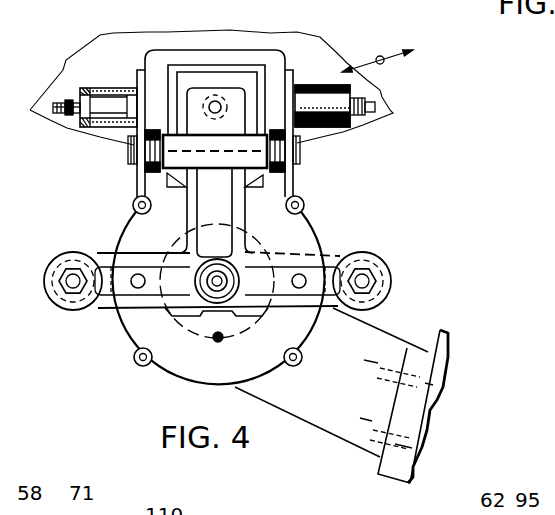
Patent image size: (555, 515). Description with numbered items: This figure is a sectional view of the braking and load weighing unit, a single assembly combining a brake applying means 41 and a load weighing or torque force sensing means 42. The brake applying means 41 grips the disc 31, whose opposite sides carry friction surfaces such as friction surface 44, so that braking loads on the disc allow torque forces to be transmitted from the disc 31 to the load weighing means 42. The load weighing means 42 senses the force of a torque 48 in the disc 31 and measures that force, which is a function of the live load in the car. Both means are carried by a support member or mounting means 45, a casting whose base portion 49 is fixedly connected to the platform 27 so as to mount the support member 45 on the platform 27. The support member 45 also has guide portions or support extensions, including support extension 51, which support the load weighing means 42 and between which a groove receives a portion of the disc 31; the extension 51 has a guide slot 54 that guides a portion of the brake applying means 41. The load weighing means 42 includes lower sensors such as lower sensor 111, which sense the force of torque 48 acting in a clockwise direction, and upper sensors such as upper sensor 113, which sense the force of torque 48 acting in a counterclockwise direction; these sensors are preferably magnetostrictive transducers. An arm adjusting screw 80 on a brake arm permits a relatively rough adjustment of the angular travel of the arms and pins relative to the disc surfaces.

The disc 31 is at (143, 33).
The friction surface 44 is at (107, 63).
The guide portion or support extension 51 is at (157, 72).
The guide slot 54 is at (225, 77).
The upper sensor 113 is at (97, 88).
The load weighing or torque force sensing means 42 is at (58, 117).
The lower sensor 111 is at (320, 85).
The torque 48 is at (385, 56).
The support member or mounting means 45 is at (178, 382).
The brake applying means 41 is at (97, 255).
The arm adjusting screw 80 is at (137, 275).
The base portion 49 is at (378, 338).
The platform 27 is at (443, 345).